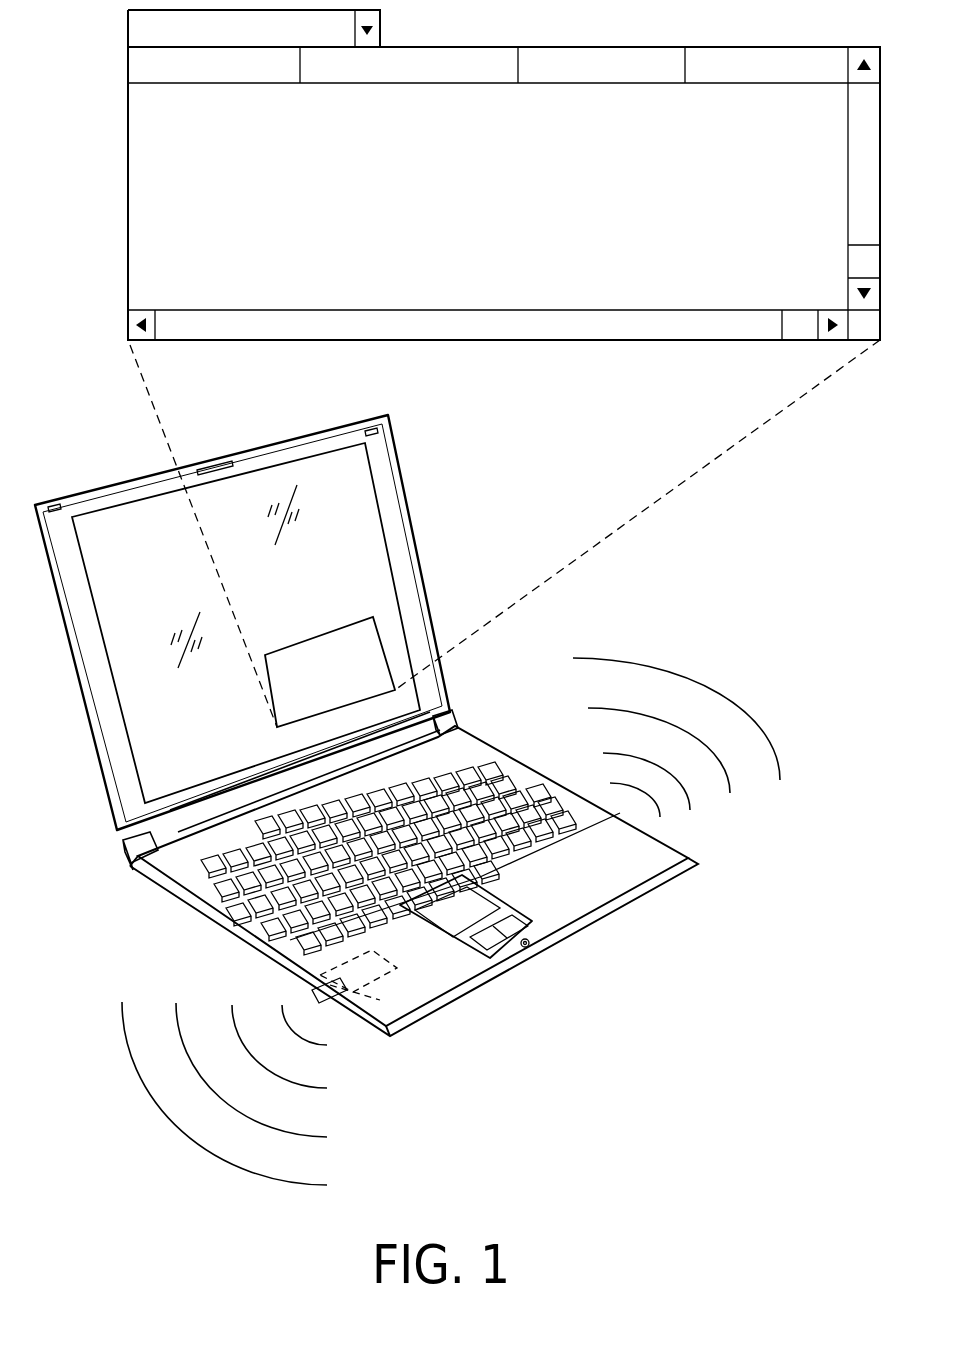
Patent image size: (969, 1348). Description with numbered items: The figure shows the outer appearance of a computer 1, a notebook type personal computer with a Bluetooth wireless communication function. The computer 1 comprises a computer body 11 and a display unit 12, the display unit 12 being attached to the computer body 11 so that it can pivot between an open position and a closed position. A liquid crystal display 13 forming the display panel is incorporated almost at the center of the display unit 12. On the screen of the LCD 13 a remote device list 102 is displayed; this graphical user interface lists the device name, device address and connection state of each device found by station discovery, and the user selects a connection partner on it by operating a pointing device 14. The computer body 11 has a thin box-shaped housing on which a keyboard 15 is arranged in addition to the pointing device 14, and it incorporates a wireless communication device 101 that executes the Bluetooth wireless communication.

The computer 1 is at (455, 529).
The computer body 11 is at (623, 883).
The display unit 12 is at (97, 713).
The liquid crystal display (LCD) 13 is at (277, 478).
The pointing device 14 is at (477, 900).
The keyboard 15 is at (203, 893).
The wireless communication device 101 is at (397, 985).
The remote device list 102 is at (343, 627).